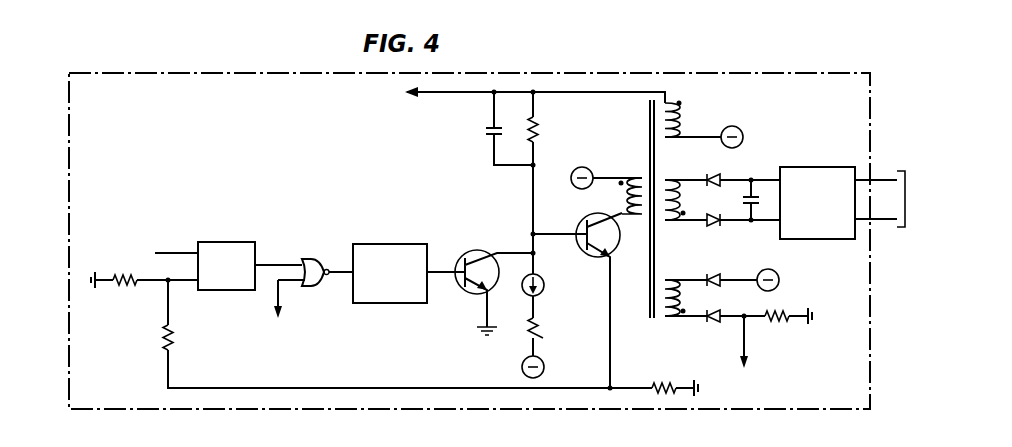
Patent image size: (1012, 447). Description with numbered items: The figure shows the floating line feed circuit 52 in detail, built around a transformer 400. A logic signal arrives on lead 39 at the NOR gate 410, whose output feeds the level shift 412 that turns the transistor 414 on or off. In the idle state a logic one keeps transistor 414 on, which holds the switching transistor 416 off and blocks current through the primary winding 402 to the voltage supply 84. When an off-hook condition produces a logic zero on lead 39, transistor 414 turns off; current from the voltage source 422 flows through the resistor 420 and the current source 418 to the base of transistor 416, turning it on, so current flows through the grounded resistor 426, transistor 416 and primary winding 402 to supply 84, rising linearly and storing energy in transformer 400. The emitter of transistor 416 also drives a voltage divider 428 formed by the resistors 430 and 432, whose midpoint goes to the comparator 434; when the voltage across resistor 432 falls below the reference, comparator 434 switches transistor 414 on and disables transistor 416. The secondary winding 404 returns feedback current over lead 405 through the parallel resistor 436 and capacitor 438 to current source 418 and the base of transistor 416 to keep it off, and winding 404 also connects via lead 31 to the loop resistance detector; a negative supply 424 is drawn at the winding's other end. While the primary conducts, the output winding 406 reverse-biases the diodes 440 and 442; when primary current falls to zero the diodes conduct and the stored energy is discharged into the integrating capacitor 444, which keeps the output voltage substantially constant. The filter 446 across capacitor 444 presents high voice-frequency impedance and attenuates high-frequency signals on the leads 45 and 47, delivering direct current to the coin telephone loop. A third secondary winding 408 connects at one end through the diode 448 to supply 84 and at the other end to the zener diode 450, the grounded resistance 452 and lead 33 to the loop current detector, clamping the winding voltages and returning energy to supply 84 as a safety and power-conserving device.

The floating line feed circuit 52 is at (85, 119).
The lead 31 is at (431, 95).
The lead 405 is at (560, 95).
The capacitor 438 is at (494, 128).
The resistor 436 is at (549, 182).
The voltage supply 84 is at (674, 219).
The primary winding 402 is at (620, 196).
The switching transistor 416 is at (589, 302).
The transistor 414 is at (494, 282).
The level shift 412 is at (390, 244).
The NOR gate 410 is at (315, 264).
The lead 39 is at (280, 300).
The comparator 434 is at (232, 242).
The resistor 432 is at (144, 272).
The voltage divider 428 is at (152, 314).
The resistor 430 is at (392, 334).
The current source 418 is at (548, 285).
The resistor 420 is at (551, 326).
The voltage source 422 is at (548, 367).
The transformer 400 is at (683, 255).
The secondary winding 404 is at (693, 119).
The negative supply voltage 424 is at (749, 137).
The output winding 406 is at (683, 188).
The diode 440 is at (740, 171).
The diode 442 is at (741, 230).
The integrating capacitor 444 is at (737, 200).
The filter 446 is at (827, 167).
The lead 47 is at (886, 179).
The lead 45 is at (880, 220).
The third secondary winding 408 is at (682, 308).
The diode 448 is at (730, 269).
The zener diode 450 is at (734, 328).
The grounded resistance 452 is at (788, 326).
The lead 33 is at (748, 350).
The grounded resistor 426 is at (675, 379).